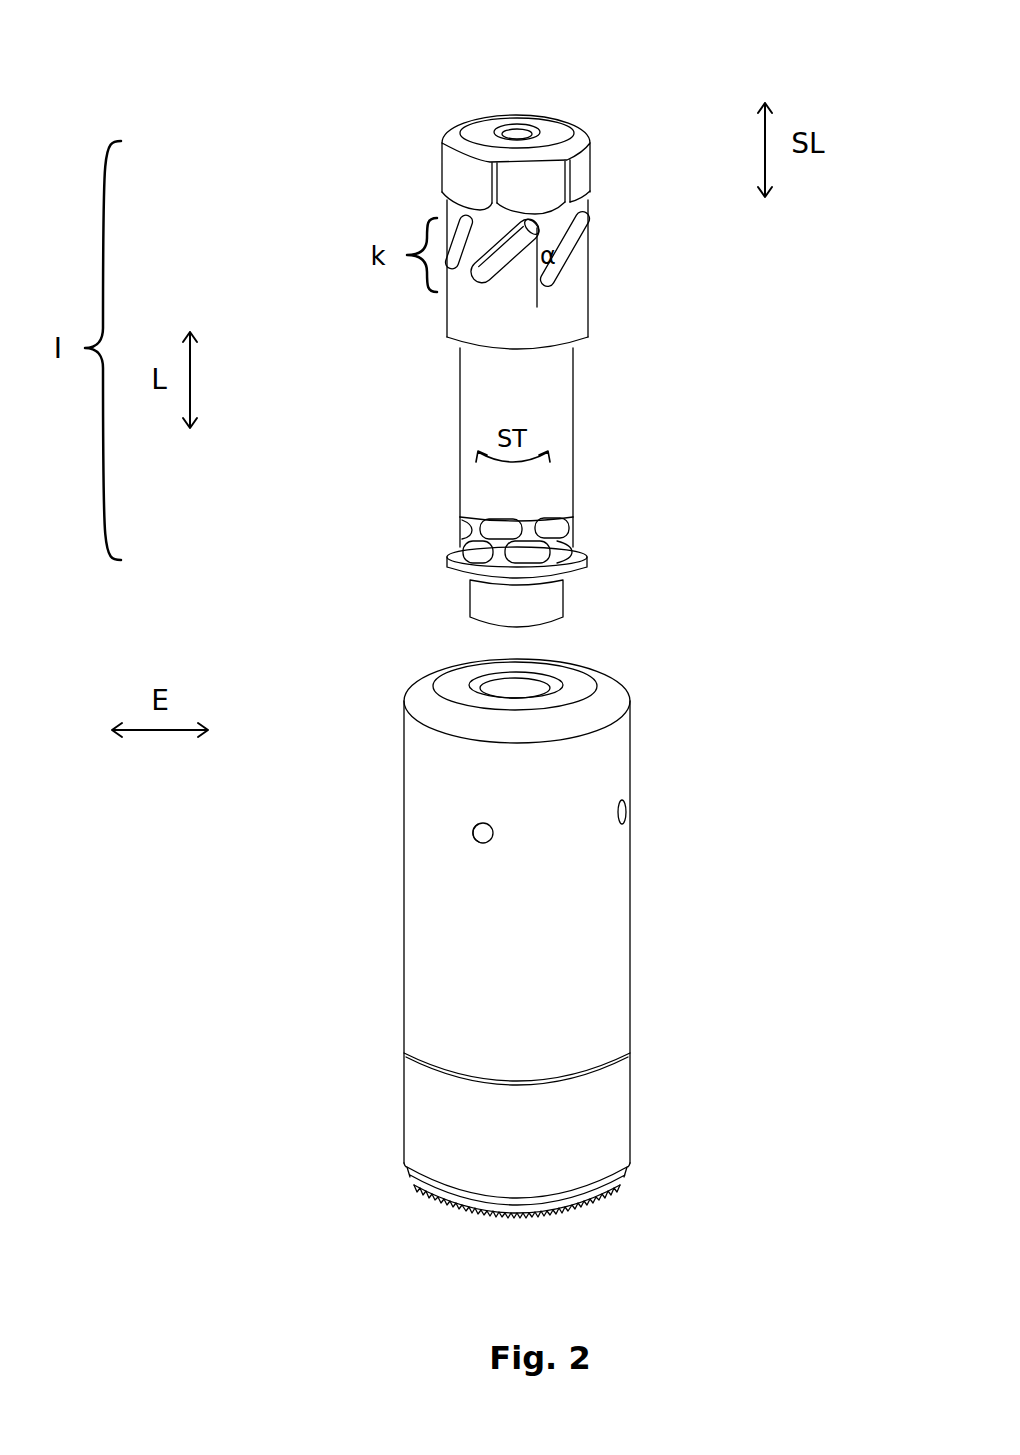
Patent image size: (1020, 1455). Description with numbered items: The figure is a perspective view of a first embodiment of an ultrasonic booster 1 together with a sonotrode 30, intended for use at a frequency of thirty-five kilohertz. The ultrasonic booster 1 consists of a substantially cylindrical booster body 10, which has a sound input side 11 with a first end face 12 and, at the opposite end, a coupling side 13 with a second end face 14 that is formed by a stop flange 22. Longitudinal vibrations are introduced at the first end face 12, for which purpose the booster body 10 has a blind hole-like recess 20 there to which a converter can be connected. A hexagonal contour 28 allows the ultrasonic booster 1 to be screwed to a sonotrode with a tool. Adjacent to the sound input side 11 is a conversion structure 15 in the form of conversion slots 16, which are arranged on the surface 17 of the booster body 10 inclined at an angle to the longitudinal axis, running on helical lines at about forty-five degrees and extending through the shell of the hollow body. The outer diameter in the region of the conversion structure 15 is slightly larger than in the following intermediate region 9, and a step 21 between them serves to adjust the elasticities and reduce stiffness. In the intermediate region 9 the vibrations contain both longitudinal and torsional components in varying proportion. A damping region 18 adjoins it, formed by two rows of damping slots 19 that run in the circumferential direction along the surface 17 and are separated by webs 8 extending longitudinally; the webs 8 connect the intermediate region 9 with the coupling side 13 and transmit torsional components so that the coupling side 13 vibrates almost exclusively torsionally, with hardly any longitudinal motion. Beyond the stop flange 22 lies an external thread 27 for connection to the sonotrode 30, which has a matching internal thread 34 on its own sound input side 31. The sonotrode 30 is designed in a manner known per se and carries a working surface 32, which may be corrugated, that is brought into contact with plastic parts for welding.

The ultrasonic booster 1 is at (695, 386).
The web 8 is at (555, 548).
The intermediate region 9 is at (330, 289).
The booster body 10 is at (530, 380).
The sound input side 11 is at (430, 123).
The first end face 12 is at (570, 128).
The coupling side 13 is at (330, 560).
The second end face 14 is at (447, 572).
The conversion structure 15 is at (330, 191).
The conversion slot 16 is at (583, 252).
The surface 17 is at (590, 297).
The damping region 18 is at (330, 502).
The damping slot 19 is at (550, 527).
The blind hole-like recess 20 is at (518, 128).
The step 21 is at (578, 333).
The stop flange 22 is at (577, 557).
The thread 27 is at (482, 597).
The hexagonal contour 28 is at (460, 168).
The sonotrode 30 is at (594, 918).
The sound input side 31 is at (583, 687).
The working surface 32 is at (430, 1202).
The internal thread 34 is at (500, 690).